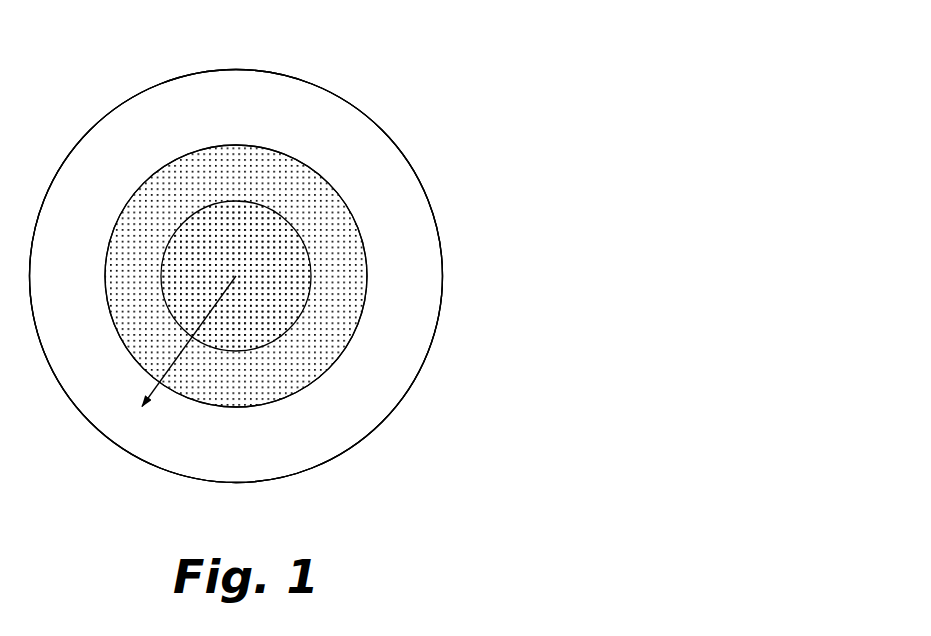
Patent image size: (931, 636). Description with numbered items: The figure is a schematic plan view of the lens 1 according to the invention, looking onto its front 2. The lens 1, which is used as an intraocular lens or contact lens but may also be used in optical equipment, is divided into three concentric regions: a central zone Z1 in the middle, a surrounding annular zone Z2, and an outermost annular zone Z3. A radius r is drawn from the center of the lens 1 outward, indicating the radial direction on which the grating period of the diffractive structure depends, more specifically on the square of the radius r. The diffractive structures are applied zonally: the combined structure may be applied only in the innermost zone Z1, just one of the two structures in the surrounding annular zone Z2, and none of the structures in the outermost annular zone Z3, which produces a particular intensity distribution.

The lens 1 is at (487, 52).
The front 2 is at (236, 276).
The central zone Z1 is at (273, 240).
The annular zone Z2 is at (352, 262).
The outermost annular zone Z3 is at (403, 188).
The radius r is at (189, 341).